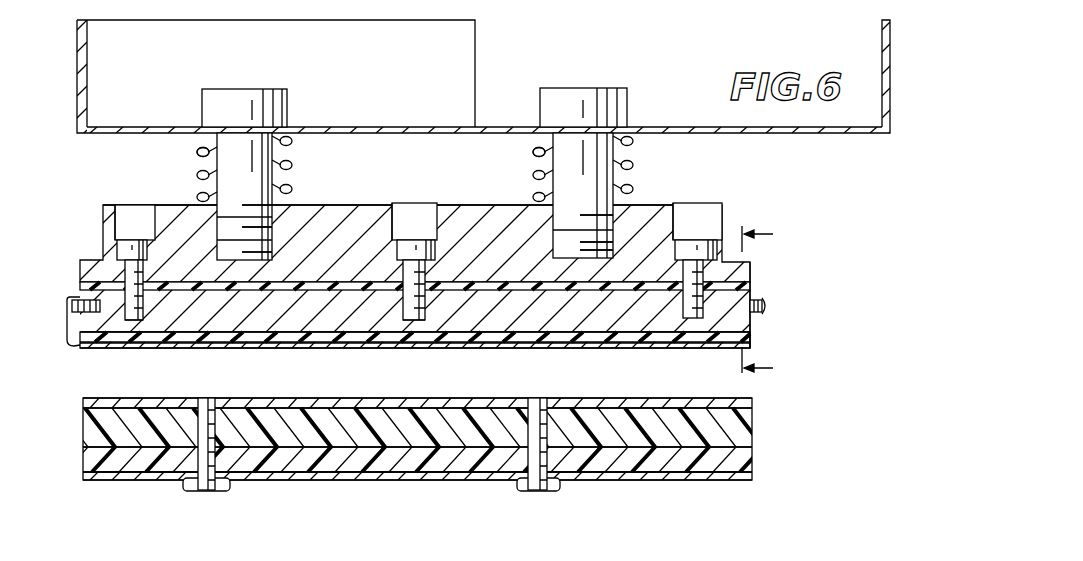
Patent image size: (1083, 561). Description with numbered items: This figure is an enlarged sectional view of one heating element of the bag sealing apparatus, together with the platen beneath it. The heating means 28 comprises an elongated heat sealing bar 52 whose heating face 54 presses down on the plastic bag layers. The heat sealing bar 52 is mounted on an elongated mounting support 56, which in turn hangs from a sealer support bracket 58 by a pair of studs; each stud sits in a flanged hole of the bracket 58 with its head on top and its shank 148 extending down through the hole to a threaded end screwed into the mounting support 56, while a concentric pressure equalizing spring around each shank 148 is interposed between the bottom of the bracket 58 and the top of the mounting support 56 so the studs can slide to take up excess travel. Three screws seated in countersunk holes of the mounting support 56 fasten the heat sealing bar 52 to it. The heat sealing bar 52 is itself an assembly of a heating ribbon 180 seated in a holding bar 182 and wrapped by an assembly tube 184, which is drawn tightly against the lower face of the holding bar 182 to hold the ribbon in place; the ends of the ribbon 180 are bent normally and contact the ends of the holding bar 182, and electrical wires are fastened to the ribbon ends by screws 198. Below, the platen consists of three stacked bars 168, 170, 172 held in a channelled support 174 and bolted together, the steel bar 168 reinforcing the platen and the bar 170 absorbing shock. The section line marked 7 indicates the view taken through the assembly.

The section line 7- 7 is at (767, 304).
The heating means 28 is at (768, 330).
The heat sealing bar 52 is at (80, 343).
The heating face 54 is at (393, 347).
The mounting support 56 is at (182, 196).
The sealer support bracket 58 is at (482, 128).
The shank 148 is at (245, 258).
The bar 168 is at (750, 404).
The bar 170 is at (752, 428).
The bar 172 is at (752, 463).
The channelled support 174 is at (411, 476).
The heating ribbon 180 is at (660, 335).
The holding bar 182 is at (527, 322).
The assembly tube 184 is at (200, 343).
The screw 198 is at (72, 305).